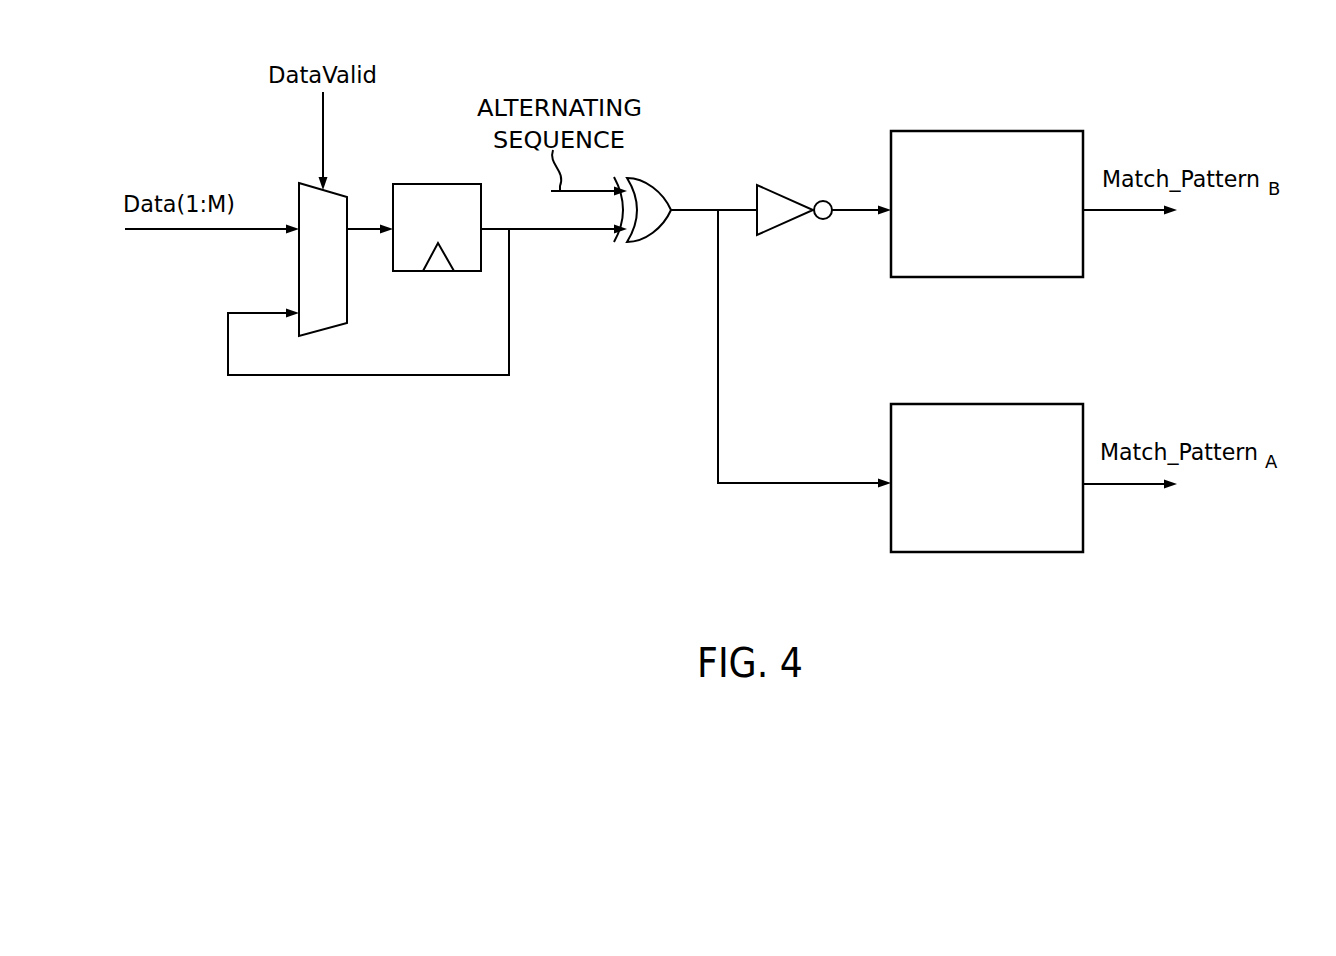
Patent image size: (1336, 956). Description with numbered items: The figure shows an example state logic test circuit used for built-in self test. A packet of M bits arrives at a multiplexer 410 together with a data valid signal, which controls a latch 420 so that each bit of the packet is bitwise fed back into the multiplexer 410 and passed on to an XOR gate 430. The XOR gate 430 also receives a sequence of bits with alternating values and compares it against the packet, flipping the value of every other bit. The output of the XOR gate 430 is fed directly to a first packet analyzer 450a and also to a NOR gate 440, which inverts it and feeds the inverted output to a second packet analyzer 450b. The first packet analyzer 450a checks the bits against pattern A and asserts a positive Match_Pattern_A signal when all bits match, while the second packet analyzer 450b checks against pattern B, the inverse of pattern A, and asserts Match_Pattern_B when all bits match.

The multiplexer 410 is at (299, 274).
The latch 420 is at (432, 273).
The XOR gate 430 is at (647, 180).
The NOR gate 440 is at (790, 195).
The first packet analyzer 450a is at (1012, 528).
The second packet analyzer 450b is at (1010, 255).